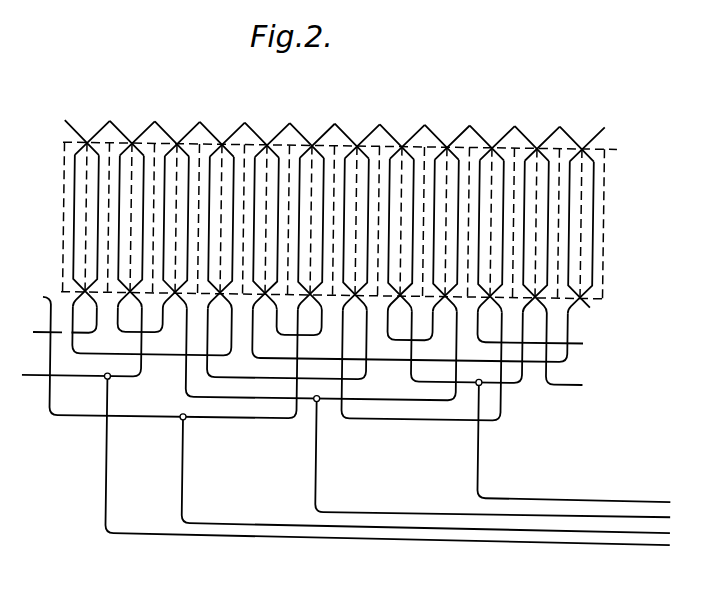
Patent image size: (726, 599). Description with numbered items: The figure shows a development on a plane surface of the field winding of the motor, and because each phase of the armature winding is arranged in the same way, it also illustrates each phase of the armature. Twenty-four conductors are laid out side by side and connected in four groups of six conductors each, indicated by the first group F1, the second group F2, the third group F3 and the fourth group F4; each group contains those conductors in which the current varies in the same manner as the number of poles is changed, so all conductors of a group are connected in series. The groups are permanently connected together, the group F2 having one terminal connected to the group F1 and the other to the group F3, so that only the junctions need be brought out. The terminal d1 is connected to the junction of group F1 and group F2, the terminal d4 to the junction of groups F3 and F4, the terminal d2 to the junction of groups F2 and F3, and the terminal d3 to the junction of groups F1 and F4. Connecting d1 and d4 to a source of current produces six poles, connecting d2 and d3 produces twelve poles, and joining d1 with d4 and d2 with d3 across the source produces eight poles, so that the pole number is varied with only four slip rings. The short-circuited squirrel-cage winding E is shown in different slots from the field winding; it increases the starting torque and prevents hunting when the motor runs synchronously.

The short-circuited squirrel-cage winding E is at (63, 142).
The first group of conductors F1 is at (298, 126).
The second group of conductors F2 is at (208, 126).
The third group of conductors F3 is at (118, 126).
The fourth group of conductors F4 is at (73, 126).
The terminal d1 is at (582, 444).
The terminal d2 is at (503, 459).
The terminal d3 is at (437, 476).
The terminal d4 is at (398, 462).